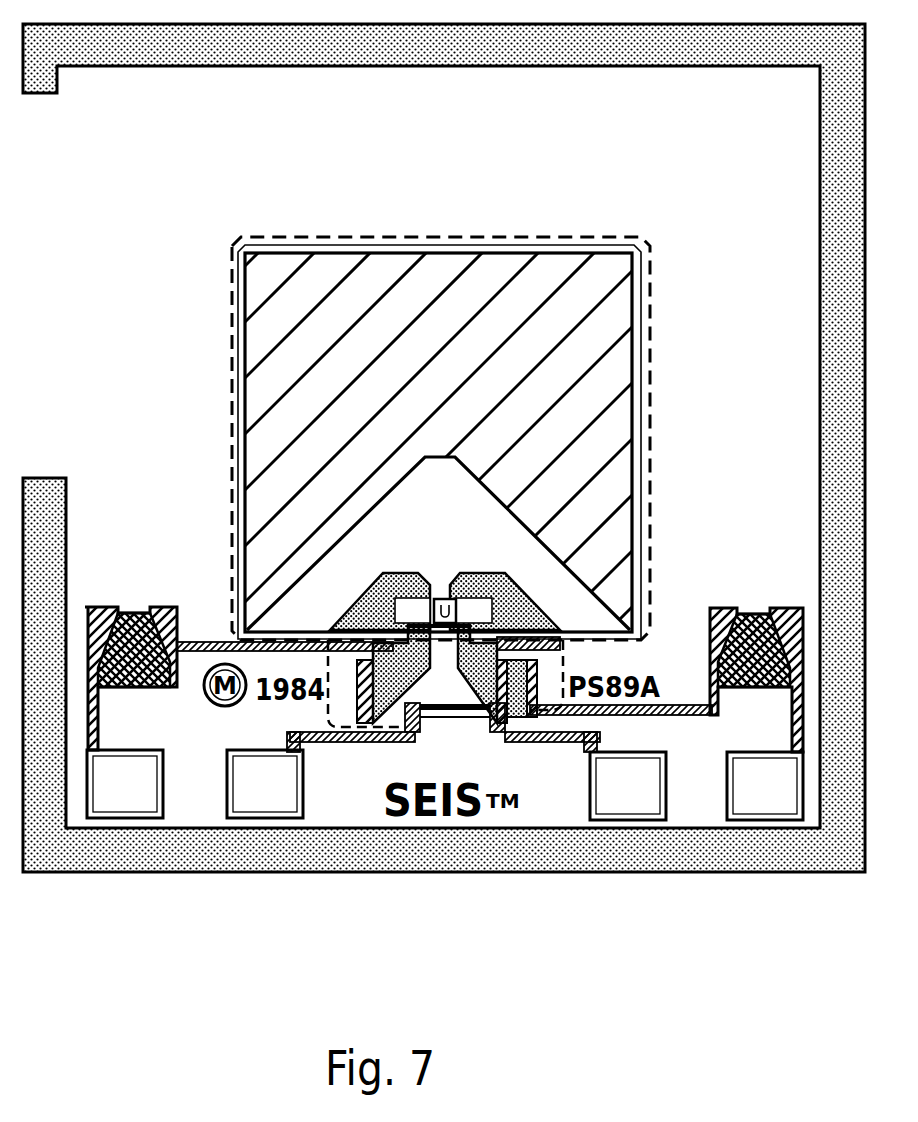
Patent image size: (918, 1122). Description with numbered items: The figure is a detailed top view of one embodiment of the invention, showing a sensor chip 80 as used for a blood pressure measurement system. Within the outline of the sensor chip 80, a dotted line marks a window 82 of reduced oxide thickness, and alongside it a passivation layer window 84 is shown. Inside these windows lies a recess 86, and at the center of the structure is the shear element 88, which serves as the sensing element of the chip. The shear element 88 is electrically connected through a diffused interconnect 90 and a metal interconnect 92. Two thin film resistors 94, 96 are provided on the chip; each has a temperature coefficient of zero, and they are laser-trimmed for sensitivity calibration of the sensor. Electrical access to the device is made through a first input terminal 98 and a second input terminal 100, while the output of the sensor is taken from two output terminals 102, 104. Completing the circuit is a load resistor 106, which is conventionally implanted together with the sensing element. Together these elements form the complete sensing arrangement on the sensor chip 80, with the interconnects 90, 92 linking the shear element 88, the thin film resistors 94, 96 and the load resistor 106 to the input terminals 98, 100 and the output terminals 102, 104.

The sensor chip 80 is at (40, 872).
The window of reduced oxide thickness 82 is at (392, 237).
The passivation layer window 84 is at (570, 245).
The recess 86 is at (567, 437).
The shear element 88 is at (446, 612).
The diffused interconnect 90 is at (513, 612).
The metal interconnect 92 is at (693, 703).
The thin film resistor 94 is at (132, 613).
The thin film resistor 96 is at (748, 613).
The first input terminal 98 is at (130, 790).
The second input terminal 100 is at (760, 795).
The output terminal 102 is at (258, 790).
The output terminal 104 is at (628, 795).
The load resistor 106 is at (450, 718).